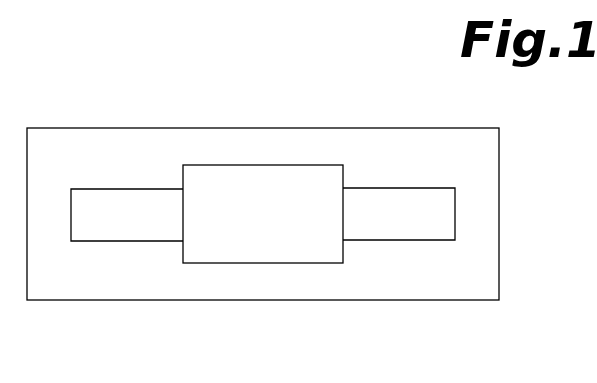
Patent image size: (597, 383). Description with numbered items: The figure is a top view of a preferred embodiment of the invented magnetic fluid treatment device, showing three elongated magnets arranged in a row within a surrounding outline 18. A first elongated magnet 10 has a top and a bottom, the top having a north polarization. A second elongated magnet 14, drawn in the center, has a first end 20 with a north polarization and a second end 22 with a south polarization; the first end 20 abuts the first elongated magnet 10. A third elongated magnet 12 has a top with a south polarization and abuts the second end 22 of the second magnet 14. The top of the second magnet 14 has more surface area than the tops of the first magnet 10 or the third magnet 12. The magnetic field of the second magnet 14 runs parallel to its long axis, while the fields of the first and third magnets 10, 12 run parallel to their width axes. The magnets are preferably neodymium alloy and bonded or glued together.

The first elongated magnet 10 is at (85, 200).
The third elongated magnet 12 is at (428, 197).
The second elongated magnet 14 is at (260, 178).
The housing 18 is at (143, 163).
The first end 20 is at (205, 257).
The second end 22 is at (322, 253).